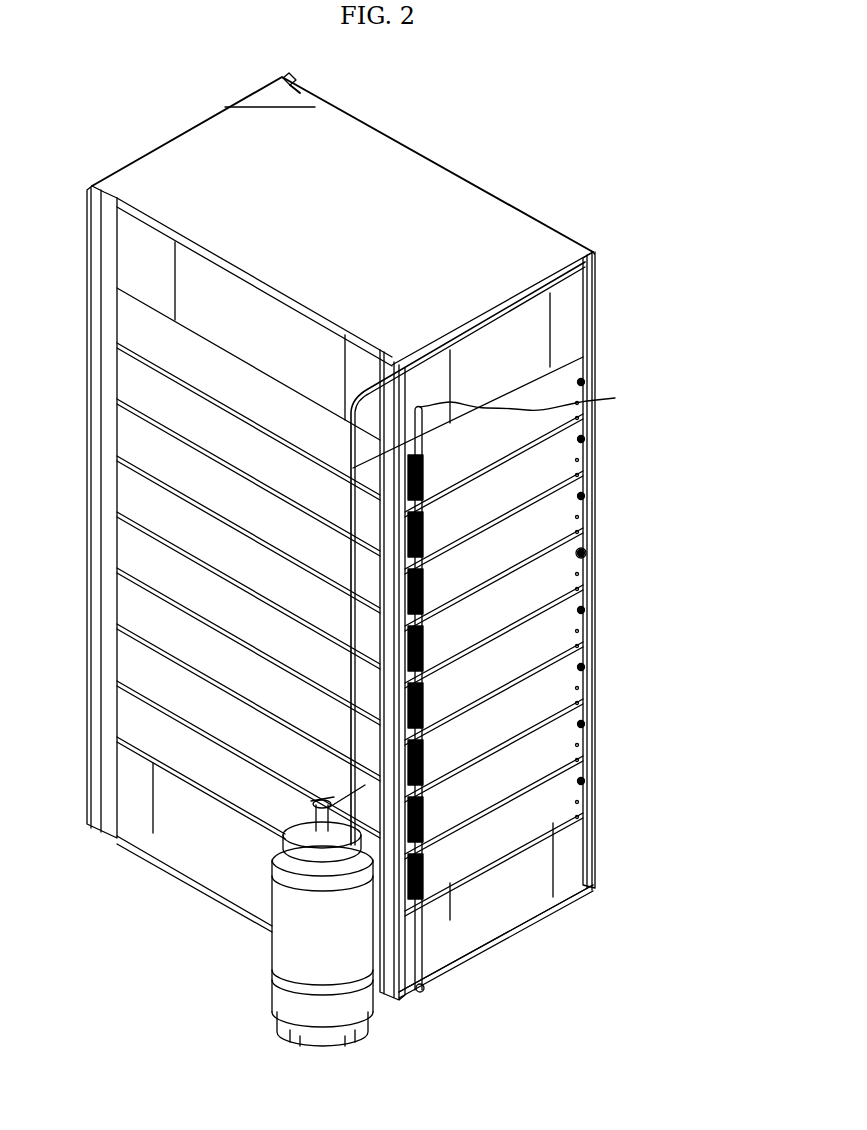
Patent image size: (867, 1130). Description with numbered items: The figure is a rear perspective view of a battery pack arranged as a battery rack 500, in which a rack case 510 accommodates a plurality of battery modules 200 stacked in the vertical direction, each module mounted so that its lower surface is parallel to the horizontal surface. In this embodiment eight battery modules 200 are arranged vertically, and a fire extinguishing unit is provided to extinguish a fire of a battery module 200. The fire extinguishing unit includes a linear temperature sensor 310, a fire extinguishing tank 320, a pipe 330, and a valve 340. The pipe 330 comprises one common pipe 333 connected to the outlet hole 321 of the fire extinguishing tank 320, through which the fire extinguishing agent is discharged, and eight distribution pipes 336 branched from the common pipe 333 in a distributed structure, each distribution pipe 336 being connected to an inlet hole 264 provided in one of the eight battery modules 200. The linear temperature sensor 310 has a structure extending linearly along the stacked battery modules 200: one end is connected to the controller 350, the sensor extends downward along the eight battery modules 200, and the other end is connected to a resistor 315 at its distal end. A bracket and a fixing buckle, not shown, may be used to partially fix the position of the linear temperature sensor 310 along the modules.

The battery rack 500 is at (515, 87).
The controller 350 is at (119, 253).
The battery module 200 is at (119, 322).
The pipe 330 is at (656, 381).
The common pipe 333 is at (537, 397).
The distribution pipe 336 is at (587, 445).
The inlet hole 264 is at (574, 556).
The linear temperature sensor 310 is at (420, 948).
The resistor 315 is at (424, 996).
The rack case 510 is at (525, 948).
The fire extinguishing tank 320 is at (262, 959).
The outlet hole 321 is at (282, 836).
The valve 340 is at (300, 816).